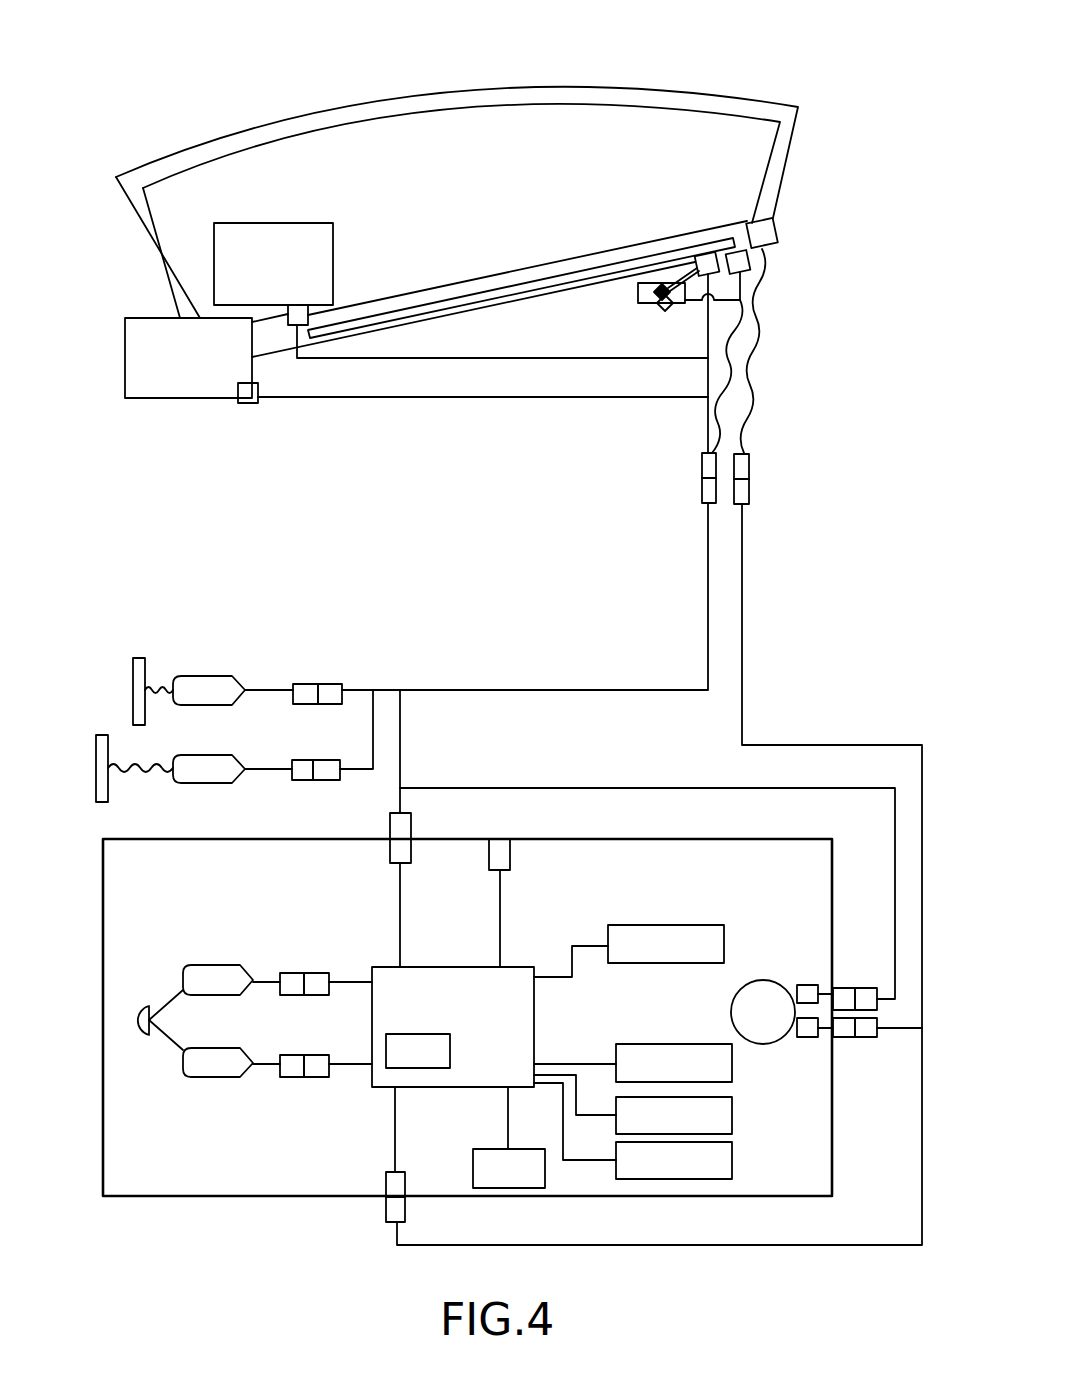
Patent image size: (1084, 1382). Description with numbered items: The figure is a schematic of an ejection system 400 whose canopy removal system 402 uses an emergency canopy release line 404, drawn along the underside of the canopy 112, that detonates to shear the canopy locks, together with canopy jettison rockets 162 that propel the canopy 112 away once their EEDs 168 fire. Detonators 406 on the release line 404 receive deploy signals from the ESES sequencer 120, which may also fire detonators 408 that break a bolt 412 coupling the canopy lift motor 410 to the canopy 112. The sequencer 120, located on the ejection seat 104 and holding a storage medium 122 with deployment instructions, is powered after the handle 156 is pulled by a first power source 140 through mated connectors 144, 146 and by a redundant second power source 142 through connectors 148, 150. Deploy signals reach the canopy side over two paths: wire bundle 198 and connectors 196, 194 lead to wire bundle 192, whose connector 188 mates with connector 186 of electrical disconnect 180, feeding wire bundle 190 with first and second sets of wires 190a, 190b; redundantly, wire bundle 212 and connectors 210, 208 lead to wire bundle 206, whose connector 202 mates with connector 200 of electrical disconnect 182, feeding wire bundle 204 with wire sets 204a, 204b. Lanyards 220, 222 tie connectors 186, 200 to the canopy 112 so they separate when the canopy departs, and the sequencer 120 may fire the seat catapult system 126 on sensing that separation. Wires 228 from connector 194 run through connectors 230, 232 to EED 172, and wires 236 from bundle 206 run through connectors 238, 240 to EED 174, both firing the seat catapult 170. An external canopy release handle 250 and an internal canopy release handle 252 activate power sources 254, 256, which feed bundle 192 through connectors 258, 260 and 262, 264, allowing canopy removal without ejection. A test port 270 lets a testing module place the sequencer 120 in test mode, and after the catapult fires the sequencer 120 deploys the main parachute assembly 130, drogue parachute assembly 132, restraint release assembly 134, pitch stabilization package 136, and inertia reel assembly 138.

The ejection system 400 is at (114, 83).
The canopy removal system 402 is at (230, 126).
The canopy 112 is at (502, 105).
The canopy jettison rockets 162 is at (258, 274).
The EEDs 168 is at (300, 315).
The emergency canopy release line 404 is at (513, 292).
The bolt 412 is at (660, 288).
The detonators 406 is at (704, 256).
The canopy lift motor 410 is at (640, 290).
The detonators 408 is at (659, 307).
The lanyard 220 is at (780, 233).
The lanyard 222 is at (785, 272).
The first set of wires 204a is at (760, 330).
The second set of wires 204b is at (745, 352).
The wire bundle 204 is at (826, 302).
The second set of wires 190b is at (545, 400).
The first set of wires 190a is at (707, 383).
The wire bundle 190 is at (667, 428).
The electrical disconnect 180 is at (636, 466).
The electrical connector 186 is at (703, 466).
The electrical connector 188 is at (703, 494).
The electrical connector 200 is at (746, 466).
The electrical connector 202 is at (748, 493).
The electrical disconnect 182 is at (843, 428).
The wire bundle 192 is at (632, 690).
The wire bundle 206 is at (748, 692).
The wires 228 is at (598, 787).
The external canopy release handle 250 is at (139, 670).
The internal canopy release handle 252 is at (102, 750).
The power source 254 is at (205, 688).
The power source 256 is at (215, 772).
The electrical connector 258 is at (302, 688).
The electrical connector 260 is at (330, 688).
The electrical connector 262 is at (300, 772).
The electrical connector 264 is at (327, 772).
The electrical connector 194 is at (405, 825).
The electrical connector 196 is at (405, 855).
The wire bundle 198 is at (399, 910).
The test port 270 is at (505, 850).
The ejection seat 104 is at (170, 891).
The second power source 142 is at (222, 978).
The electrical connector 144 is at (290, 978).
The electrical connector 146 is at (318, 978).
The first power source 140 is at (215, 1065).
The electrical connector 148 is at (290, 1066).
The electrical connector 150 is at (318, 1066).
The handle 156 is at (133, 1020).
The ESES sequencer 120 is at (438, 1021).
The computer-readable storage medium 122 is at (403, 1062).
The main parachute assembly 130 is at (647, 955).
The drogue parachute assembly 132 is at (658, 1074).
The restraint release assembly 134 is at (658, 1126).
The pitch stabilization package 136 is at (658, 1171).
The inertia reel assembly 138 is at (494, 1179).
The seat catapult system 126 is at (773, 975).
The seat catapult 170 is at (748, 1023).
The EED 172 is at (807, 984).
The EED 174 is at (810, 1038).
The electrical connector 232 is at (845, 987).
The electrical connector 230 is at (869, 987).
The electrical connector 240 is at (845, 1038).
The electrical connector 238 is at (869, 1038).
The wires 236 is at (905, 1030).
The wire bundle 212 is at (398, 1130).
The electrical connector 210 is at (386, 1180).
The electrical connector 208 is at (388, 1213).